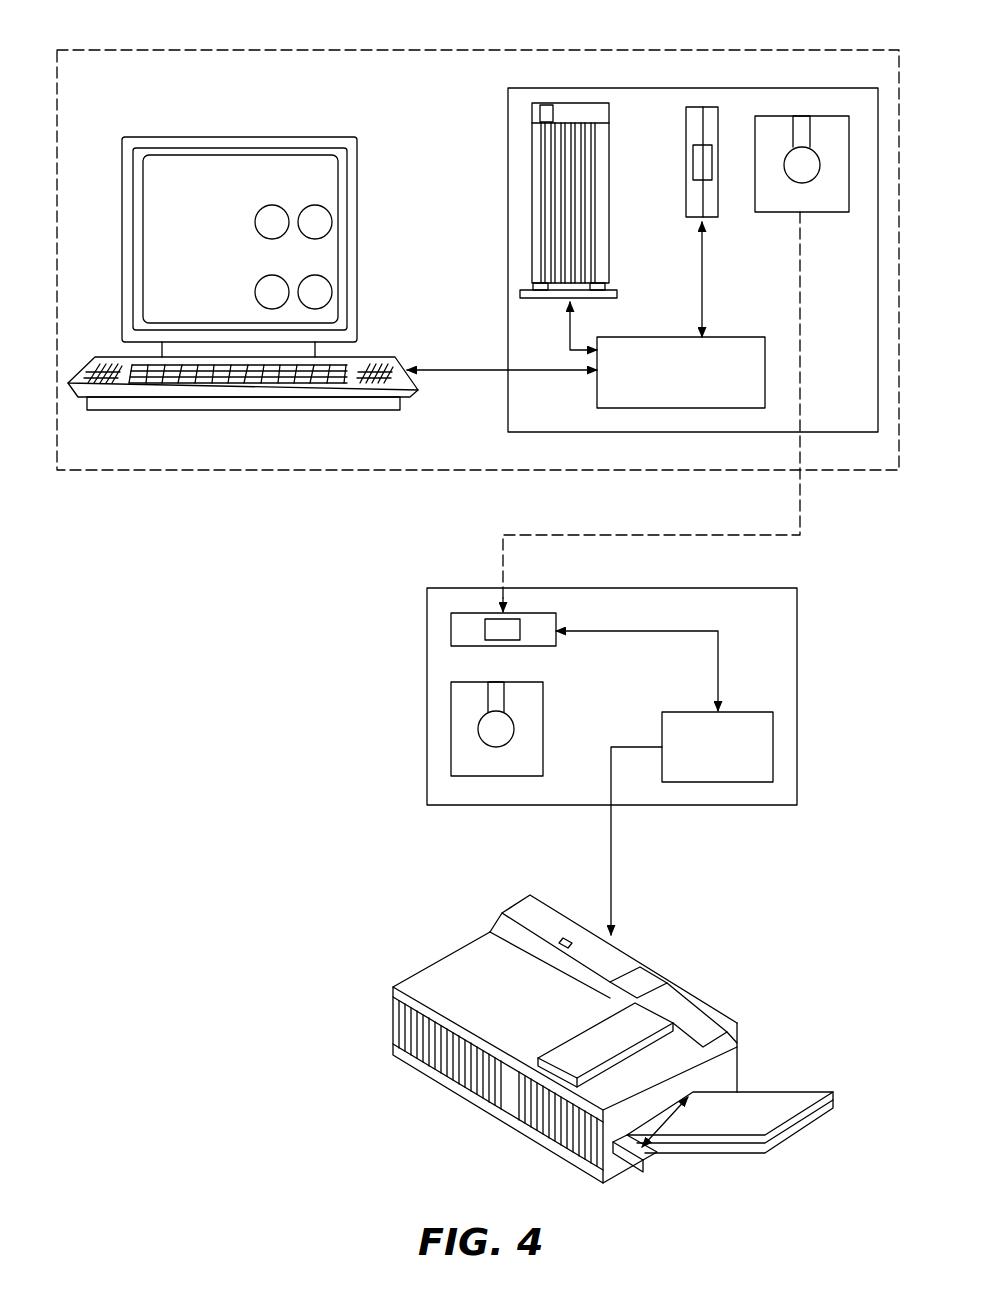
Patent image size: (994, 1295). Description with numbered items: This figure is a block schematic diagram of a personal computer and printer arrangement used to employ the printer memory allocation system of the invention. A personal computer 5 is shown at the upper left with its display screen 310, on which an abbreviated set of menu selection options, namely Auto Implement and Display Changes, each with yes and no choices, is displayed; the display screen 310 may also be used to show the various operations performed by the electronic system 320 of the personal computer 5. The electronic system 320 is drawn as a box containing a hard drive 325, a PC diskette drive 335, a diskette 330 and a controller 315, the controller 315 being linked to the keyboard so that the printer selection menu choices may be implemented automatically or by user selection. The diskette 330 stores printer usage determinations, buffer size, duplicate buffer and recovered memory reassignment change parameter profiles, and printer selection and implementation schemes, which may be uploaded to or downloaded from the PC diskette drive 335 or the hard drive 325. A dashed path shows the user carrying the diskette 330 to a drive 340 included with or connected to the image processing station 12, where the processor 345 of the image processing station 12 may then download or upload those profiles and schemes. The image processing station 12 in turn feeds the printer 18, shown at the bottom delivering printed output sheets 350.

The personal computer 5 is at (292, 46).
The display screen 310 is at (283, 167).
The electronic system 320 is at (507, 258).
The hard drive 325 is at (532, 167).
The PC diskette drive 335 is at (687, 182).
The diskette 330 is at (770, 212).
The controller 315 is at (663, 336).
The image processing station 12 is at (807, 675).
The drive 340 is at (451, 628).
The processor 345 is at (720, 765).
The printer 18 is at (440, 945).
The output sheets 350 is at (768, 1103).